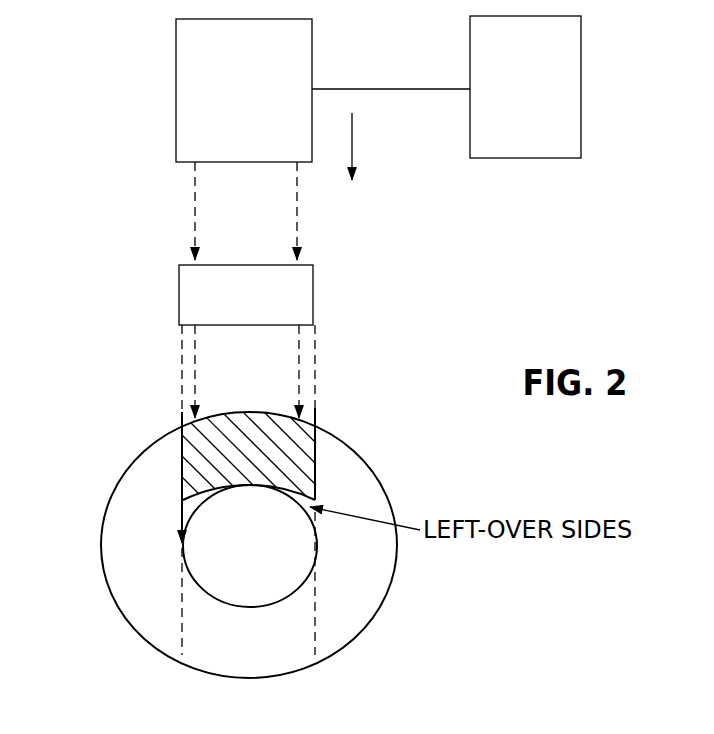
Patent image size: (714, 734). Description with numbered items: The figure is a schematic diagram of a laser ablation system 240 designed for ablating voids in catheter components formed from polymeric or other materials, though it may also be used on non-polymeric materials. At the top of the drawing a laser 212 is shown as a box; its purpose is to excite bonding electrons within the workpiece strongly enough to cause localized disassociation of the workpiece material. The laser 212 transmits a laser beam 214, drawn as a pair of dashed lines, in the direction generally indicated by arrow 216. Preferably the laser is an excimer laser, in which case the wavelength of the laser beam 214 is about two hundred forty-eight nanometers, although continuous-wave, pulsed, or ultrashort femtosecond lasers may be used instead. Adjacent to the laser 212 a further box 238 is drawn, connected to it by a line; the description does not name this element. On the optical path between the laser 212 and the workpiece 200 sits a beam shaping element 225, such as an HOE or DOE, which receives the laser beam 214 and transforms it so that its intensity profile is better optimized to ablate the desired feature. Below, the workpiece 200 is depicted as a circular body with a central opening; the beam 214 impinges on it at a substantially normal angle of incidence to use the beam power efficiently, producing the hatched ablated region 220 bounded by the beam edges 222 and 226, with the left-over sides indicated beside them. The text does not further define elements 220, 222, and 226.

The workpiece 200 is at (70, 417).
The laser 212 is at (221, 101).
The laser beam 214 is at (195, 213).
The arrow 216 is at (353, 144).
The implanted region 220 is at (192, 437).
The beam edge 222 is at (182, 465).
The beam shaping element 225 is at (223, 316).
The beam edge 226 is at (316, 470).
The controller 238 is at (502, 101).
The laser ablation system 240 is at (487, 231).